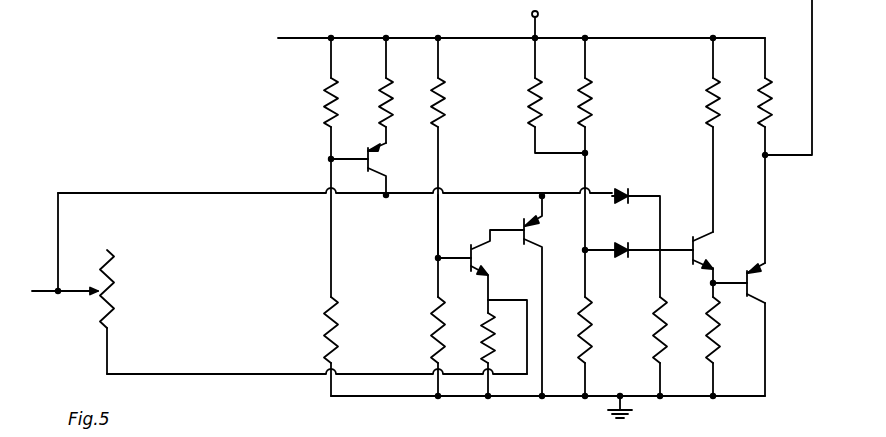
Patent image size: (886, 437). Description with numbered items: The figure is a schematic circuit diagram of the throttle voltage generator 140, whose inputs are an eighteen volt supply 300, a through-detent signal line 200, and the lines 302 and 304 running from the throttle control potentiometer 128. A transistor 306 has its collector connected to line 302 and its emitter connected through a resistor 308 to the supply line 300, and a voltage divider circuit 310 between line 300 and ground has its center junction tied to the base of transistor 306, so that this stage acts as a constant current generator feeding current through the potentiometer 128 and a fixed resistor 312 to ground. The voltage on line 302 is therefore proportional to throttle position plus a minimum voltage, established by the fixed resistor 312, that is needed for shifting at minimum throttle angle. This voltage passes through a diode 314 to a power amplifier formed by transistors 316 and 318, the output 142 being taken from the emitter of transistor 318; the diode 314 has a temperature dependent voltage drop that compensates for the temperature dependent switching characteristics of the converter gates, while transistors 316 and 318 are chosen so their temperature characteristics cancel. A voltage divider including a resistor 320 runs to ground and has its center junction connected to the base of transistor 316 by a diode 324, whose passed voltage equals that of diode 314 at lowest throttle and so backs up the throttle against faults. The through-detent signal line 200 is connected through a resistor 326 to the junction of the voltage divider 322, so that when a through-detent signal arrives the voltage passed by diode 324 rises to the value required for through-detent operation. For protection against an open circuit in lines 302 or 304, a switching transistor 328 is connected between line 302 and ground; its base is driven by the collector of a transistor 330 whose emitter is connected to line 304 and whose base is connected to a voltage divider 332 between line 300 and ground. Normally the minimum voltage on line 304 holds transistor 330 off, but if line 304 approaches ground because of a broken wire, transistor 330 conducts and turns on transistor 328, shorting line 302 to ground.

The 18 volt supply 300 is at (312, 38).
The through-detent signal line 200 is at (535, 33).
The resistor 308 is at (376, 97).
The resistor 320 is at (589, 104).
The resistor 326 is at (530, 98).
The output 142 is at (812, 86).
The transistor 306 is at (370, 160).
The line 302 is at (120, 193).
The diode 314 is at (618, 190).
The diode 324 is at (618, 255).
The transistor 316 is at (692, 238).
The transistor 318 is at (745, 272).
The voltage divider 332 is at (440, 232).
The switching transistor 328 is at (528, 230).
The transistor 330 is at (474, 260).
The fixed resistor 312 is at (480, 322).
The voltage divider circuit 310 is at (333, 244).
The voltage divider 322 is at (590, 330).
The throttle control potentiometer 128 is at (110, 291).
The line 304 is at (170, 374).
The throttle voltage generator 140 is at (376, 398).